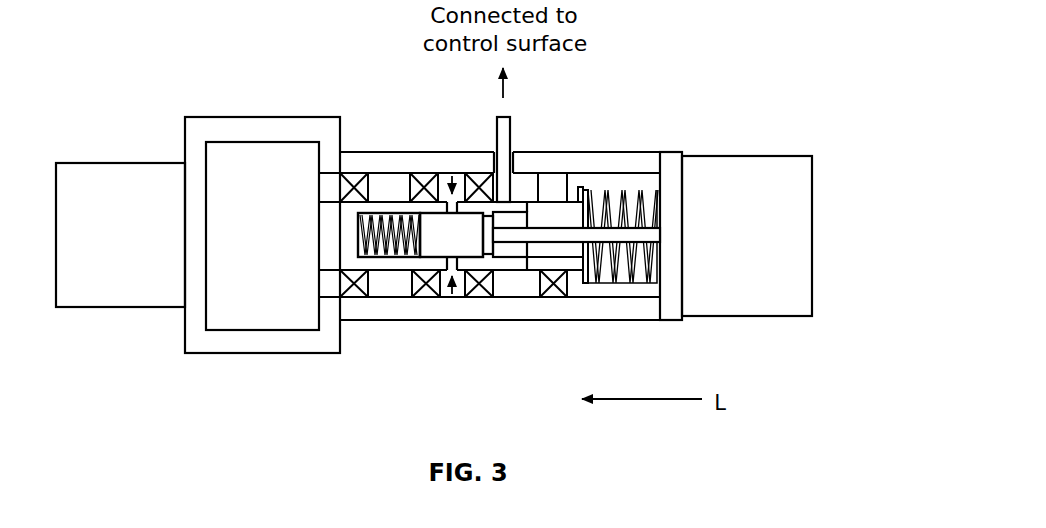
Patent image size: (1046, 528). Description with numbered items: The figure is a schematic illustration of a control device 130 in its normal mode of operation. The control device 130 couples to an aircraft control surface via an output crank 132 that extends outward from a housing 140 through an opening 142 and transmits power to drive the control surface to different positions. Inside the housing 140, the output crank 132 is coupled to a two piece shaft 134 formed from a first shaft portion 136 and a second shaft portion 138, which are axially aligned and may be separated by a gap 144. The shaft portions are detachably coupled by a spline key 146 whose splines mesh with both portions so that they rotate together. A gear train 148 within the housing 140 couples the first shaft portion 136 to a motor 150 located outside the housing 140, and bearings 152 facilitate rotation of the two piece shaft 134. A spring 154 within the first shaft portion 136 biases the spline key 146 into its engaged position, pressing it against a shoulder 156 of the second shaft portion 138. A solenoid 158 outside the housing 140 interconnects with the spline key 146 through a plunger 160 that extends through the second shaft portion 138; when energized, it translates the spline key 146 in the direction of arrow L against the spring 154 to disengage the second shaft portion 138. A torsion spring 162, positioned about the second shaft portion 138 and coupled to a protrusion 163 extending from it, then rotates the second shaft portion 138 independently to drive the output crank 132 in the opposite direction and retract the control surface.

The control device 130 is at (782, 111).
The output crank 132 is at (514, 127).
The two piece shaft 134 is at (452, 152).
The first shaft portion 136 is at (388, 212).
The second shaft portion 138 is at (524, 200).
The housing 140 is at (378, 322).
The opening 142 is at (494, 148).
The gap 144 is at (455, 320).
The spline key 146 is at (442, 220).
The gear train 148 is at (263, 323).
The motor 150 is at (117, 303).
The bearings 152 is at (376, 301).
The spring 154 is at (380, 203).
The shoulder 156 is at (489, 217).
The solenoid 158 is at (753, 315).
The plunger 160 is at (512, 244).
The torsion spring 162 is at (610, 180).
The protrusion 163 is at (586, 189).